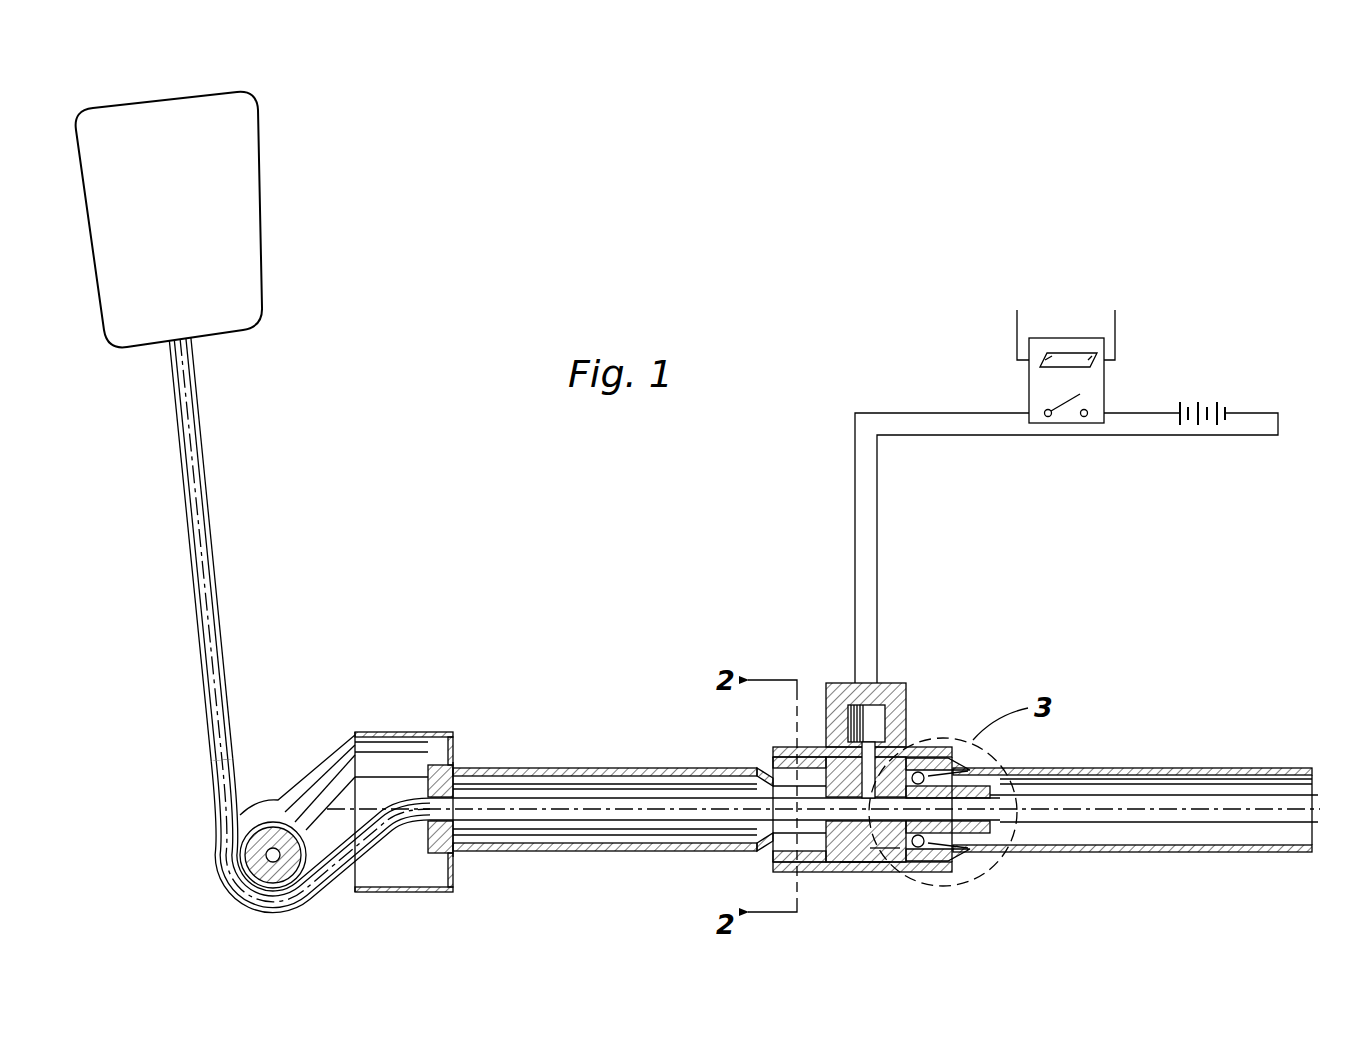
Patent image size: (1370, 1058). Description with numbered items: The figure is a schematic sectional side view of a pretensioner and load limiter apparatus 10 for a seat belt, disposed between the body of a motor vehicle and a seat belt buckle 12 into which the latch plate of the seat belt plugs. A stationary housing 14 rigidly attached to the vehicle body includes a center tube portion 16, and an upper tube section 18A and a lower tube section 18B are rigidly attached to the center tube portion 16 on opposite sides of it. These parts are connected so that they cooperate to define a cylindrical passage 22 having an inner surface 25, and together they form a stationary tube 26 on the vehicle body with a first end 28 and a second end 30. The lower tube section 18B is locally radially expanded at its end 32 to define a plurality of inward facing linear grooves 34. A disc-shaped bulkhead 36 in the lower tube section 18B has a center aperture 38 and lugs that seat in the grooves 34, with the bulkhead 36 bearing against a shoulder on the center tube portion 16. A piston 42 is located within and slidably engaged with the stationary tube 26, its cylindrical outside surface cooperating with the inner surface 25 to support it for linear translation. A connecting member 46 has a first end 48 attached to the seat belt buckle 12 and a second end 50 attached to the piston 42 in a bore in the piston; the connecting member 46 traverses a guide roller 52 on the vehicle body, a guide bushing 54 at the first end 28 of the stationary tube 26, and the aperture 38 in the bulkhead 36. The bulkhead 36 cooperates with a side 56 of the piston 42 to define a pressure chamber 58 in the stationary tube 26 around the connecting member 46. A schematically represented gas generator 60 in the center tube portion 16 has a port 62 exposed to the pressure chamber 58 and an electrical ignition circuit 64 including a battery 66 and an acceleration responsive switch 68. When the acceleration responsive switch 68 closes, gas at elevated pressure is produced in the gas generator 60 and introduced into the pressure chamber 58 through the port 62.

The pretensioner and load limiter apparatus 10 is at (706, 647).
The seat belt buckle 12 is at (232, 240).
The stationary housing 14 is at (884, 771).
The center tube portion 16 is at (890, 680).
The upper tube section 18A is at (1233, 768).
The lower tube section 18B is at (535, 768).
The cylindrical passage 22 is at (535, 837).
The inner surface 25 is at (1219, 843).
The stationary tube 26 is at (1161, 792).
The first end 28 is at (453, 762).
The second end 30 is at (1313, 800).
The end 32 is at (828, 703).
The inward facing linear grooves 34 is at (775, 857).
The disc-shaped bulkhead 36 is at (817, 788).
The center aperture 38 is at (813, 800).
The piston 42 is at (1000, 840).
The connecting member 46 is at (228, 657).
The first end 48 is at (205, 437).
The second end 50 is at (1007, 792).
The guide roller 52 is at (262, 818).
The guide bushing 54 is at (412, 845).
The side 56 is at (885, 850).
The pressure chamber 58 is at (865, 845).
The gas generator 60 is at (883, 722).
The port 62 is at (875, 750).
The electrical ignition circuit 64 is at (1066, 496).
The battery 66 is at (1203, 403).
The acceleration responsive switch 68 is at (1105, 375).